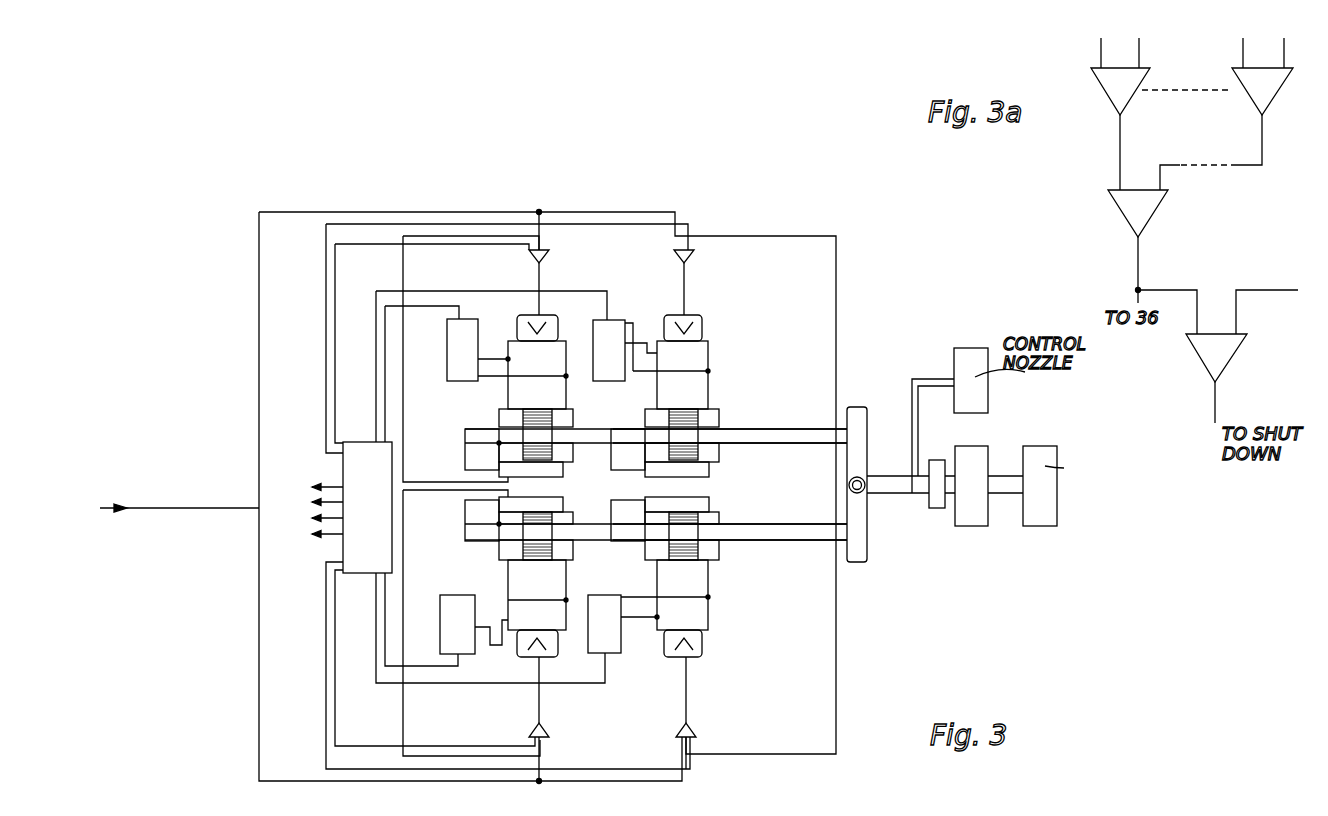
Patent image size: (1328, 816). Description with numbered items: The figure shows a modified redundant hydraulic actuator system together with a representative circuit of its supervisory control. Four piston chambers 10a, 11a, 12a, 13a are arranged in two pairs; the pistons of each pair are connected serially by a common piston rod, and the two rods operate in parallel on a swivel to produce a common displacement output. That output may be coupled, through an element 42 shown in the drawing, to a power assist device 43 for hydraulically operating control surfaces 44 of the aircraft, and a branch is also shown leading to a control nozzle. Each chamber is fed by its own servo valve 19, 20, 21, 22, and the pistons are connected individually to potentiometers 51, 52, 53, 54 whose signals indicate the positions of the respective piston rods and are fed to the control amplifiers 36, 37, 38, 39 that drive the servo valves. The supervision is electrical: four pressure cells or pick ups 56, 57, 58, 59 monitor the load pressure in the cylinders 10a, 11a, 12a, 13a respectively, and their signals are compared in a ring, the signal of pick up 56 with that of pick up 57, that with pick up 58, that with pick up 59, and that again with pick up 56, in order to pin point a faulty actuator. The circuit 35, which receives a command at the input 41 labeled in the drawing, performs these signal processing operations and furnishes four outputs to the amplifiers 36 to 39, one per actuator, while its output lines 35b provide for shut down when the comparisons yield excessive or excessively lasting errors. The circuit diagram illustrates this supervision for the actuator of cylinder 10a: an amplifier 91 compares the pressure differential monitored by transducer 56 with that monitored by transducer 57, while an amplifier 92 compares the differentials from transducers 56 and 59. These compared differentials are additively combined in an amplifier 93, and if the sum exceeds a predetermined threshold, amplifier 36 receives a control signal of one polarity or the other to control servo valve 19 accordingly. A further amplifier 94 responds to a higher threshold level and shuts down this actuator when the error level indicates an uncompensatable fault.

In FIG. 3, the piston chamber 10a is at (506, 414).
In FIG. 3, the piston chamber 11a is at (722, 414).
In FIG. 3, the piston chamber 12a is at (722, 552).
In FIG. 3, the piston chamber 13a is at (505, 552).
In FIG. 3, the servo valve 19 is at (552, 333).
In FIG. 3, the servo valve 20 is at (696, 332).
In FIG. 3, the servo valve 21 is at (698, 641).
In FIG. 3, the servo valve 22 is at (527, 648).
In FIG. 3, the circuit 35 is at (360, 543).
In FIG. 3, the output lines 35b is at (316, 534).
In FIG. 3, the amplifier 36 is at (546, 255).
In FIG. 3, the amplifier 37 is at (690, 260).
In FIG. 3, the amplifier 38 is at (699, 728).
In FIG. 3, the amplifier 39 is at (553, 731).
In FIG. 3, the input signal 41 is at (259, 486).
In FIG. 3, the link 42 is at (938, 512).
In FIG. 3, the power assist device 43 is at (973, 518).
In FIG. 3, the control surfaces 44 is at (1048, 512).
In FIG. 3, the potentiometer 51 is at (548, 469).
In FIG. 3, the potentiometer 52 is at (697, 470).
In FIG. 3, the potentiometer 53 is at (702, 503).
In FIG. 3, the potentiometer 54 is at (548, 503).
In FIG. 3, the pressure pick up 56 is at (462, 366).
In FIG. 3A, the pressure pick up 56 is at (1195, 40).
In FIG. 3, the pressure pick up 57 is at (612, 340).
In FIG. 3A, the pressure pick up 57 is at (1145, 40).
In FIG. 3, the pressure pick up 58 is at (608, 641).
In FIG. 3, the pressure pick up 59 is at (460, 605).
In FIG. 3A, the pressure pick up 59 is at (1244, 40).
In FIG. 3A, the amplifier 91 is at (1115, 90).
In FIG. 3A, the amplifier 92 is at (1270, 90).
In FIG. 3A, the amplifier 93 is at (1135, 212).
In FIG. 3A, the amplifier 94 is at (1225, 352).